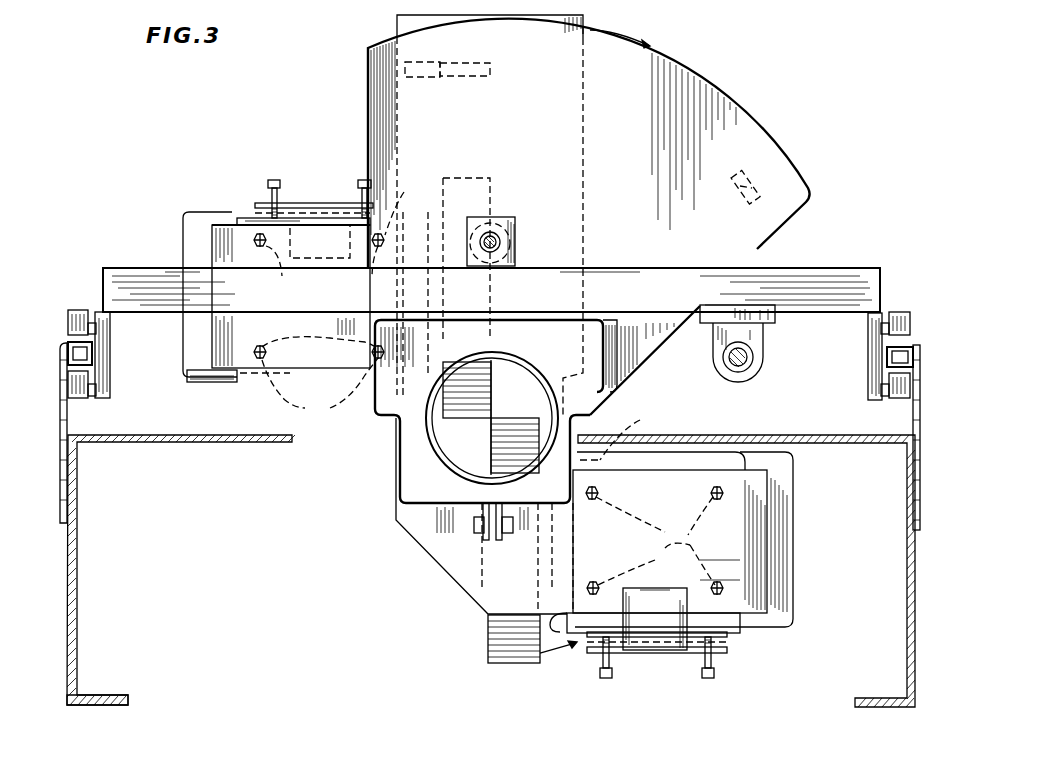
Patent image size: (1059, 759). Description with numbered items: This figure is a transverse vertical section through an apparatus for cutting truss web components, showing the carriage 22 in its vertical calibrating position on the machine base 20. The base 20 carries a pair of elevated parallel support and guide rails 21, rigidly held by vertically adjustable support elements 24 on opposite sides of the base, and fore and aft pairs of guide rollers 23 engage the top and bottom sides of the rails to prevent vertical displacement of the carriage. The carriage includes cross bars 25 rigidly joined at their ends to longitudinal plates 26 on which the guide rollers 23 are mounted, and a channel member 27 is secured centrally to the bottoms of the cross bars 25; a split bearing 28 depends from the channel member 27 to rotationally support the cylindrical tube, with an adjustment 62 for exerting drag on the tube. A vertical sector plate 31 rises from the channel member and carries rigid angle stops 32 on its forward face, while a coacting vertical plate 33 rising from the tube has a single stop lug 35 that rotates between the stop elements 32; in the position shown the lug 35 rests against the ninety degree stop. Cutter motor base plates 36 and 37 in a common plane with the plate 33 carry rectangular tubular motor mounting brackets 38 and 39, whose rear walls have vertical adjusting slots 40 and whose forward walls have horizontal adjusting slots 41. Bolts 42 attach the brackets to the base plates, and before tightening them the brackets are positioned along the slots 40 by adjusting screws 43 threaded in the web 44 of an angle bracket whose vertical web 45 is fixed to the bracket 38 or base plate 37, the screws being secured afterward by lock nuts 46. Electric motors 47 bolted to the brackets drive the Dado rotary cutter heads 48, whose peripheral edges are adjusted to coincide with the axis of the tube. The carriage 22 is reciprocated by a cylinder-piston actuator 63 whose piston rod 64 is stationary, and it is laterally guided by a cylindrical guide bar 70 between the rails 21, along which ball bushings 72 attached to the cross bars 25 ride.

The machine base 20 is at (67, 660).
The support and guide rails 21 is at (66, 342).
The carriage 22 is at (883, 310).
The guide rollers 23 is at (77, 317).
The support elements 24 is at (62, 482).
The cross bars 25 is at (833, 272).
The longitudinal plates 26 is at (110, 368).
The channel member 27 is at (612, 347).
The split bearing 28 is at (418, 483).
The sector plate 31 is at (650, 152).
The angle stops 32 is at (420, 78).
The vertical plate 33 is at (586, 19).
The stop lug 35 is at (466, 66).
The cutter motor base plate 36 is at (220, 224).
The cutter motor base plate 37 is at (757, 548).
The motor mounting bracket 38 is at (247, 217).
The motor mounting bracket 39 is at (733, 634).
The vertical adjusting slots 40 is at (487, 393).
The horizontal adjusting slots 41 is at (477, 379).
The bolts 42 is at (263, 247).
The adjusting screws 43 is at (275, 180).
The web 44 is at (257, 203).
The vertical web 45 is at (318, 260).
The lock nuts 46 is at (352, 203).
The electric motors 47 is at (203, 383).
The Dado rotary cutter heads 48 is at (473, 422).
The bearing adjustment 62 is at (476, 522).
The cylinder-piston actuator 63 is at (517, 222).
The piston rod 64 is at (500, 243).
The guide bar 70 is at (742, 364).
The ball bushings 72 is at (763, 338).